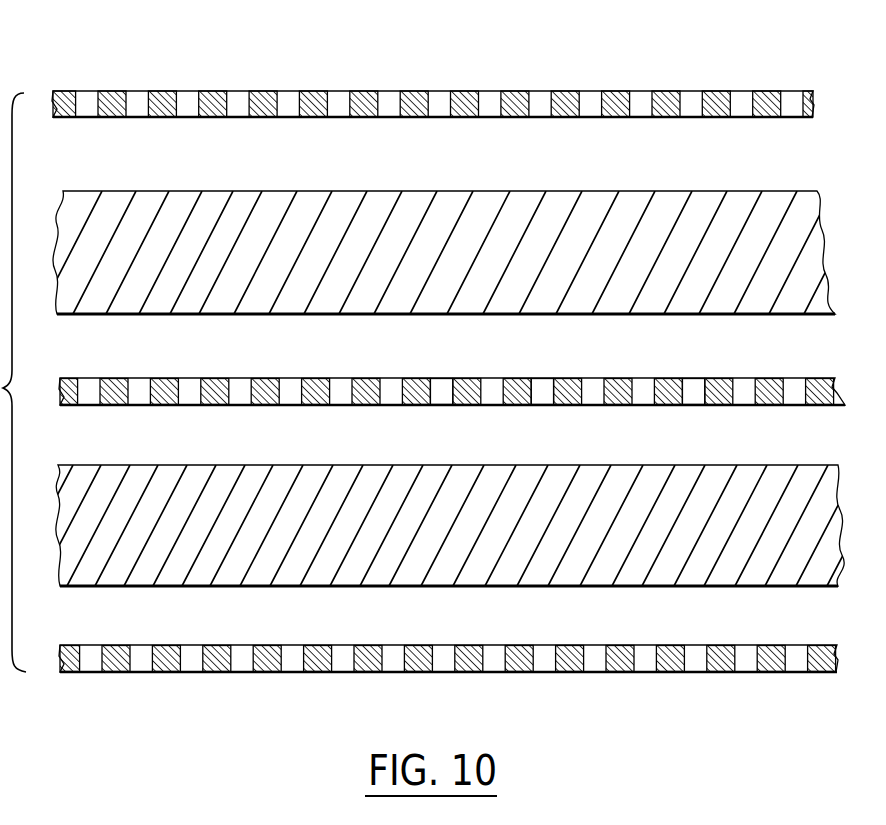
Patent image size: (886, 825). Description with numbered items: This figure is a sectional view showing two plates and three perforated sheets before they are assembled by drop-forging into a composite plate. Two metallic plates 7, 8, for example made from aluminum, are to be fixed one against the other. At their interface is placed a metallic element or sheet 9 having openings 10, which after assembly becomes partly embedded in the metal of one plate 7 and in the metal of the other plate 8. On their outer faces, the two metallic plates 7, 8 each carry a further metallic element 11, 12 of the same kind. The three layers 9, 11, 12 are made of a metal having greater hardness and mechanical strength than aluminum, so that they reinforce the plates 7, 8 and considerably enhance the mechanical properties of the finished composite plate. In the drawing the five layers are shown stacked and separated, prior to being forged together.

The metallic plate 7 is at (762, 222).
The metallic plate 8 is at (787, 515).
The metallic element or sheet 9 is at (412, 380).
The openings 10 is at (433, 392).
The metallic element 11 is at (617, 105).
The metallic element 12 is at (572, 673).